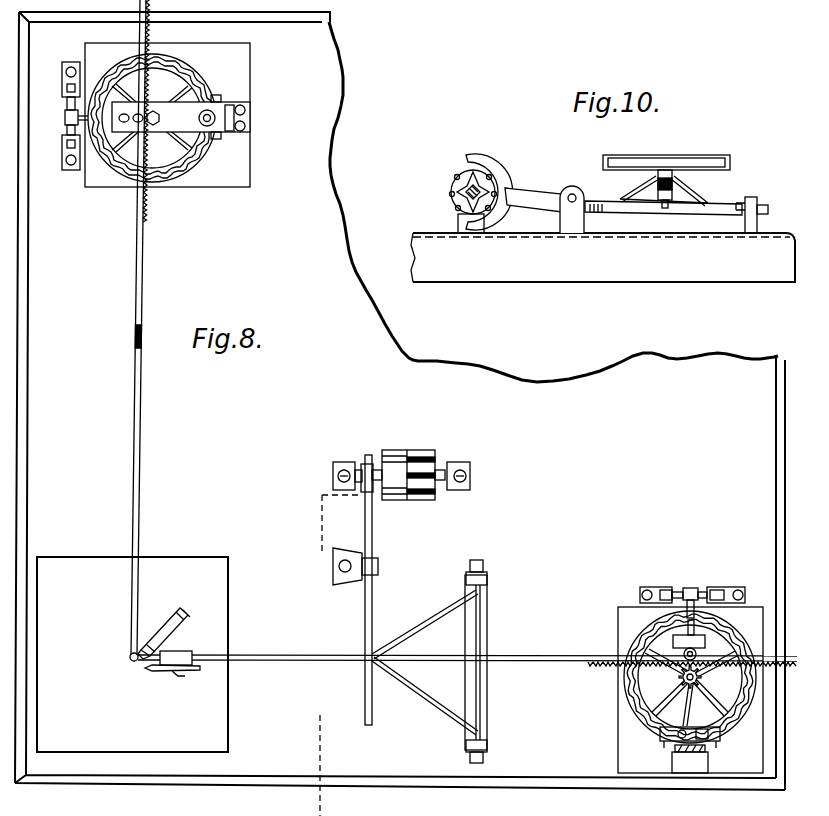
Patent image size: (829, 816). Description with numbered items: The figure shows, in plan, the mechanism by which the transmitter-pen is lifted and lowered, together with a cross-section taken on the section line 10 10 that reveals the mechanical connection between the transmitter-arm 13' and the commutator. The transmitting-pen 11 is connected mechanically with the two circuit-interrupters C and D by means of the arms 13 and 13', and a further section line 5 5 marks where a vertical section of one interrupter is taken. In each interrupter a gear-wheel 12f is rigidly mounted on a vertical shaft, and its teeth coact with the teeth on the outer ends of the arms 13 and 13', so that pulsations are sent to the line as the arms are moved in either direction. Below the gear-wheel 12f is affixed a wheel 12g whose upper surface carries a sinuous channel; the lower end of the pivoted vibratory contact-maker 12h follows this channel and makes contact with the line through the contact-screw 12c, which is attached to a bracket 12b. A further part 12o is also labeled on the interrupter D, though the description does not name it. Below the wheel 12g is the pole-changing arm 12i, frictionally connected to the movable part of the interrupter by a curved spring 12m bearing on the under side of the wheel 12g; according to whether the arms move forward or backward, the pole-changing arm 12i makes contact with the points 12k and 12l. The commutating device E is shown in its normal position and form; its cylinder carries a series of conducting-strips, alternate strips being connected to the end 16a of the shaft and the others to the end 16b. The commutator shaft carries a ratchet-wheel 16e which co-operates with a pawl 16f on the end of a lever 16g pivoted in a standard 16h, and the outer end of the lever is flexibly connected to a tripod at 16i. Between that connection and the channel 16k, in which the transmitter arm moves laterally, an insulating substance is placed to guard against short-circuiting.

In FIG. 8, the circuit-interrupter C is at (167, 115).
In FIG. 8, the section line 5 5 is at (290, 118).
In FIG. 8, the pole-changing arm 12i is at (64, 122).
In FIG. 8, the transmitting-arm 13 is at (148, 330).
In FIG. 8, the section line 10 10 is at (364, 458).
In FIG. 8, the commutating device E is at (408, 462).
In FIG. 10, the commutating device E is at (666, 169).
In FIG. 8, the end of commutator shaft 16b is at (378, 495).
In FIG. 8, the end of commutator shaft 16a is at (440, 495).
In FIG. 8, the transmitter-arm 13' is at (467, 650).
In FIG. 10, the transmitter-arm 13' is at (682, 166).
In FIG. 8, the transmitting-pen 11 is at (170, 699).
In FIG. 8, the circuit-interrupter D is at (677, 666).
In FIG. 8, the wheel 12g is at (645, 700).
In FIG. 8, the curved spring 12m is at (662, 631).
In FIG. 8, the vibratory contact-maker 12h is at (692, 687).
In FIG. 8, the gear-wheel 12f is at (680, 679).
In FIG. 8, the pawl block 12o is at (684, 652).
In FIG. 8, the contact point 12l is at (662, 587).
In FIG. 8, the contact point 12k is at (722, 587).
In FIG. 8, the contact-screw 12c is at (672, 741).
In FIG. 8, the bracket 12b is at (706, 749).
In FIG. 10, the ratchet-wheel 16e is at (455, 180).
In FIG. 10, the pawl 16f is at (505, 170).
In FIG. 10, the lever 16g is at (540, 187).
In FIG. 10, the standard 16h is at (562, 216).
In FIG. 10, the tripod connection 16i is at (665, 204).
In FIG. 10, the channel 16k is at (728, 164).